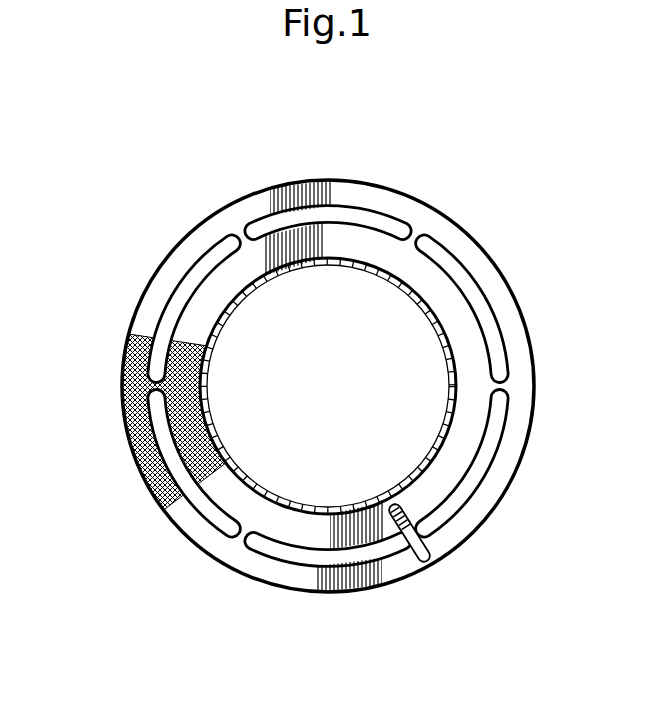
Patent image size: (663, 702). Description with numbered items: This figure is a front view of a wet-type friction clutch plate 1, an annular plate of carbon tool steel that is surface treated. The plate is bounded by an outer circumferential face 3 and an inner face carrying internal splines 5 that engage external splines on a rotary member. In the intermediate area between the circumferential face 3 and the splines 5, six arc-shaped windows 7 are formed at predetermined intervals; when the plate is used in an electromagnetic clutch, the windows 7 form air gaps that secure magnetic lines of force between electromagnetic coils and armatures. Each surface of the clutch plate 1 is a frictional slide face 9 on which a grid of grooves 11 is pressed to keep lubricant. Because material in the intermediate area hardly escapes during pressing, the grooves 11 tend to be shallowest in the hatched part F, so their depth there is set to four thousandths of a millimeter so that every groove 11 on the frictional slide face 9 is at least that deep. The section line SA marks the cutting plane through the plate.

The wet-type friction clutch plate 1 is at (445, 207).
The circumferential face 3 is at (367, 181).
The splines 5 is at (380, 269).
The windows 7 is at (466, 272).
The frictional slide face 9 is at (205, 228).
The grooves 11 is at (120, 338).
The hatched part F is at (408, 510).
The section line SA is at (325, 149).